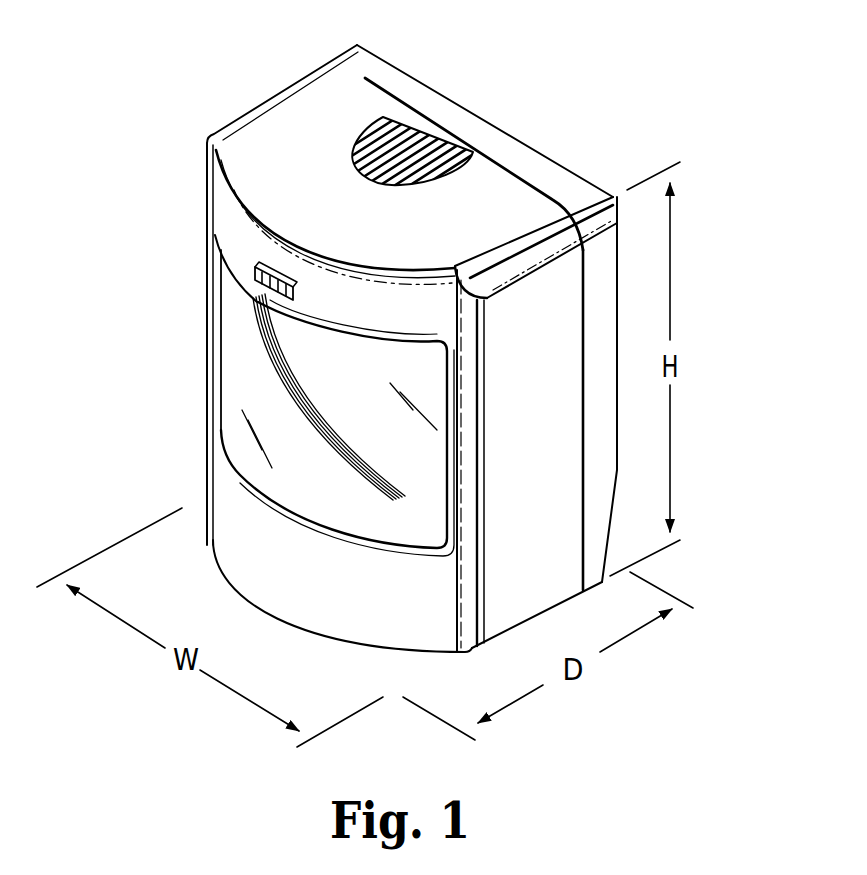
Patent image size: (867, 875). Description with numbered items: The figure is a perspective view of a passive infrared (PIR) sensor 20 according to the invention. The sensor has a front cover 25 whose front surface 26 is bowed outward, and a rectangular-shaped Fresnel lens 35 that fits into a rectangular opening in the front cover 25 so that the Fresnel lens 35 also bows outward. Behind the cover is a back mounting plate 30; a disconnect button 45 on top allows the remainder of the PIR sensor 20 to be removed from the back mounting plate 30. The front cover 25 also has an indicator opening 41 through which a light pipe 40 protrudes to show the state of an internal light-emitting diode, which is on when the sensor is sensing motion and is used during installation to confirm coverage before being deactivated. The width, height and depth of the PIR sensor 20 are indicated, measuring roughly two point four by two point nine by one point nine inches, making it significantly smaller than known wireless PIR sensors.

The passive infrared (PIR) sensor 20 is at (222, 91).
The front cover 25 is at (243, 163).
The front surface 26 is at (320, 627).
The back mounting plate 30 is at (370, 67).
The Fresnel lens 35 is at (253, 455).
The light pipe 40 is at (257, 300).
The indicator opening 41 is at (257, 267).
The disconnect button 45 is at (412, 133).